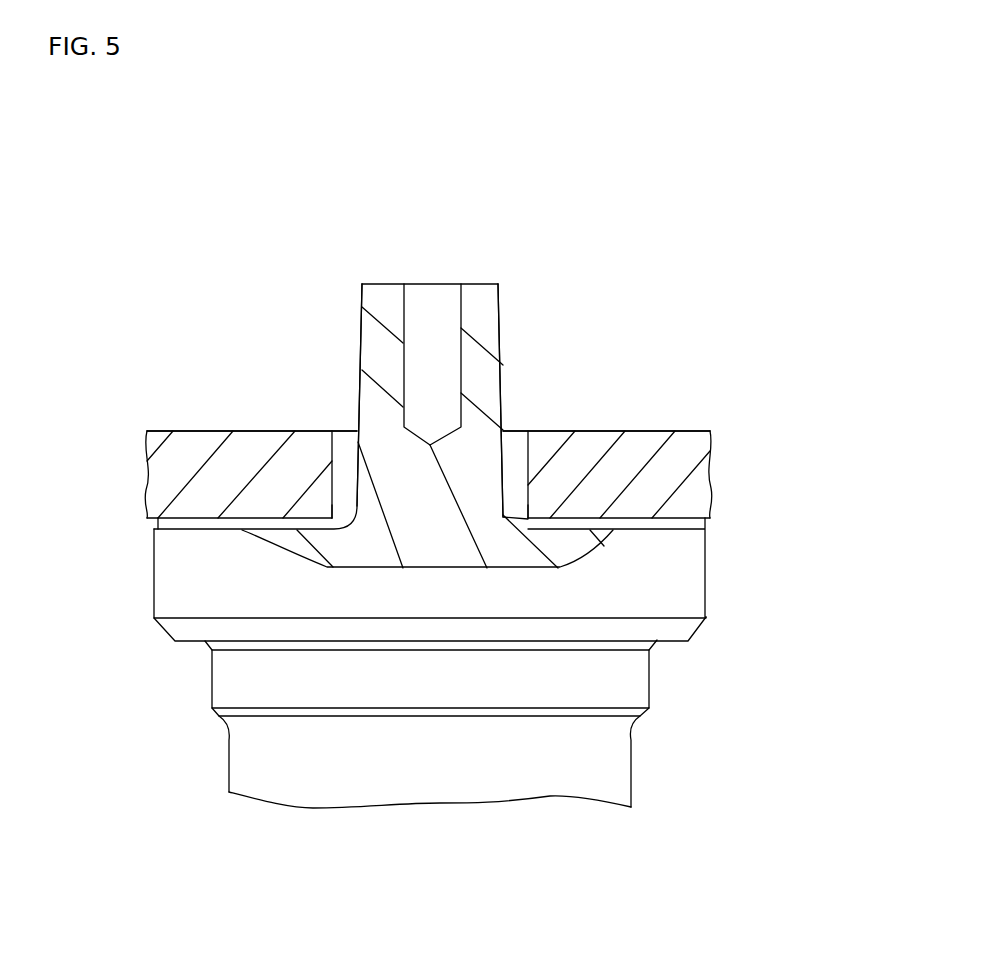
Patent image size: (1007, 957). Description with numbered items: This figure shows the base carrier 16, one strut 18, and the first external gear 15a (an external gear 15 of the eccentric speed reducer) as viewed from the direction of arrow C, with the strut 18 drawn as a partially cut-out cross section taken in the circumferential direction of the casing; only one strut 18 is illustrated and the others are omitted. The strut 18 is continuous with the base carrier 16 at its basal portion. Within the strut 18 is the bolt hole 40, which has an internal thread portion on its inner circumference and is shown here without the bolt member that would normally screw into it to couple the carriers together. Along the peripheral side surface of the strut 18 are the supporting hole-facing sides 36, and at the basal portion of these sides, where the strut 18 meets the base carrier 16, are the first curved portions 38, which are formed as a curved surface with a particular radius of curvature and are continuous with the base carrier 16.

The external gear 15 is at (706, 480).
The first external gear 15a is at (522, 465).
The base carrier 16 is at (700, 583).
The strut 18 is at (484, 303).
The supporting hole-facing sides 36 is at (359, 367).
The first curved portions 38 is at (345, 521).
The bolt hole 40 is at (424, 308).